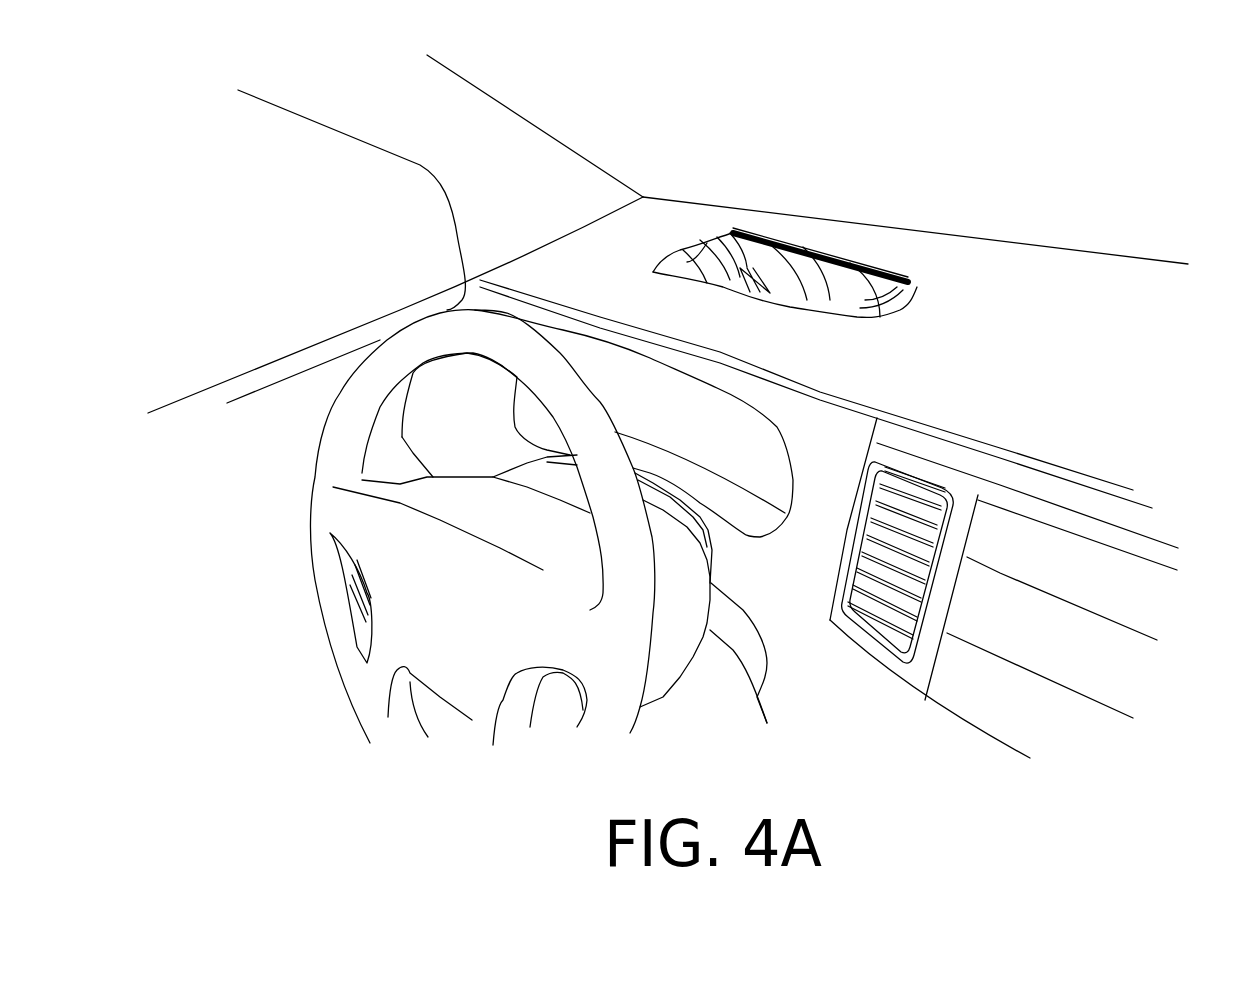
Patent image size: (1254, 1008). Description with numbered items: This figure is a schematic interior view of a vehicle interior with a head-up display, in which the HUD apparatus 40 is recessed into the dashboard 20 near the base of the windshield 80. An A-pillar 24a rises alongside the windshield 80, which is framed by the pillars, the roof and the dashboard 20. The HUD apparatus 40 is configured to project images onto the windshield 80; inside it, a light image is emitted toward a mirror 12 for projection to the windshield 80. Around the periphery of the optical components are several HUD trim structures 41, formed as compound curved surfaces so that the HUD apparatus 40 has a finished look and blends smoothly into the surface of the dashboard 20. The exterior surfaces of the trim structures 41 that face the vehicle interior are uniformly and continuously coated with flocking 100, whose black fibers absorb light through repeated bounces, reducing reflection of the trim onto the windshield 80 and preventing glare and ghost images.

The dashboard 20 is at (1012, 245).
The A-pillar 24a is at (495, 117).
The windshield 80 is at (598, 147).
The HUD apparatus 40 is at (824, 262).
The HUD trim structure 41 is at (687, 260).
The mirror 12 is at (808, 258).
The flocking 100 is at (715, 230).